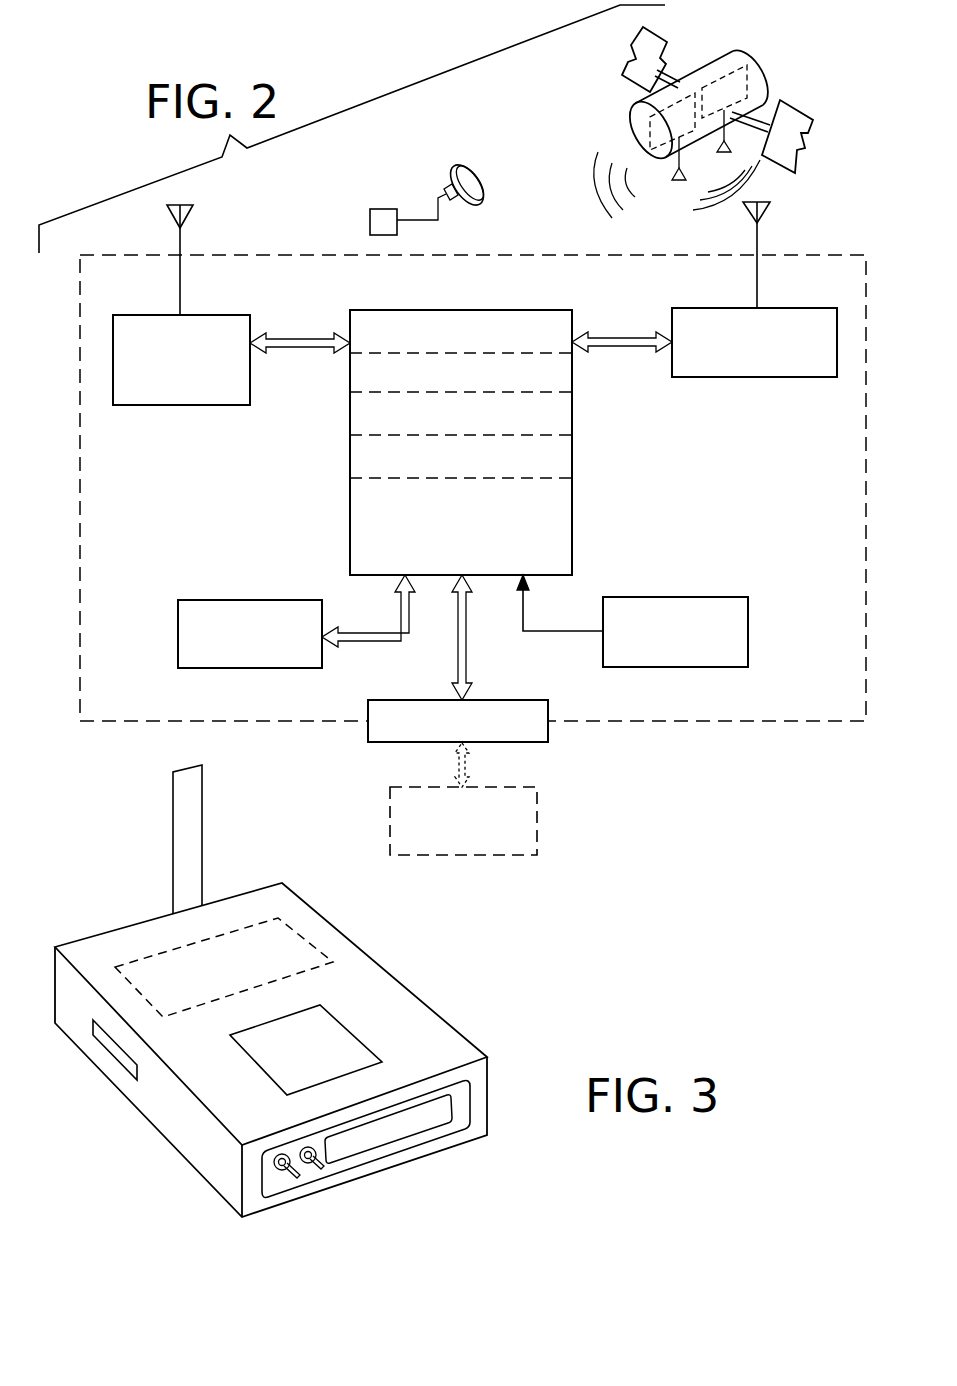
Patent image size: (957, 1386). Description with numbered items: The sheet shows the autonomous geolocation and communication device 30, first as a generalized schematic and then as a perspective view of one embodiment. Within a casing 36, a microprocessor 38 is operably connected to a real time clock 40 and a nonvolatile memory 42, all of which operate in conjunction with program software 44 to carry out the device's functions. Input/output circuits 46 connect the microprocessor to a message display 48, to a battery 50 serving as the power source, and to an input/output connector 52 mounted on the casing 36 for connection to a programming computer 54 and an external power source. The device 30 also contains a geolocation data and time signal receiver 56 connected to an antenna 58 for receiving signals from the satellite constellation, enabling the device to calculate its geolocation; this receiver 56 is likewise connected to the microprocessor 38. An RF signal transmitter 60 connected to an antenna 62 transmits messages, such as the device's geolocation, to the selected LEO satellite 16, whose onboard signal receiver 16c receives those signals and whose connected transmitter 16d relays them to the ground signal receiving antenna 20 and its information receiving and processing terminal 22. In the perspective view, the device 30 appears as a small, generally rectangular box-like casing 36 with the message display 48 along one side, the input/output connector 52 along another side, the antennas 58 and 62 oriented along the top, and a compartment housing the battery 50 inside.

In FIG. 2, the satellite 16 is at (706, 122).
In FIG. 2, the signal receiver 16c is at (728, 70).
In FIG. 2, the transmitter 16d is at (616, 108).
In FIG. 2, the signal receiving antenna 20 is at (456, 170).
In FIG. 2, the information receiving and processing terminal 22 is at (373, 209).
In FIG. 2, the device 30 is at (118, 730).
In FIG. 3, the device 30 is at (436, 949).
In FIG. 2, the casing 36 is at (722, 721).
In FIG. 2, the microprocessor 38 is at (470, 310).
In FIG. 2, the real time clock 40 is at (572, 378).
In FIG. 2, the nonvolatile memory 42 is at (572, 418).
In FIG. 2, the program software 44 is at (572, 456).
In FIG. 2, the input/output circuits 46 is at (572, 540).
In FIG. 2, the message display 48 is at (218, 600).
In FIG. 3, the message display 48 is at (383, 1138).
In FIG. 2, the battery 50 is at (704, 597).
In FIG. 3, the battery 50 is at (286, 948).
In FIG. 2, the input/output connector 52 is at (530, 742).
In FIG. 3, the input/output connector 52 is at (128, 1068).
In FIG. 2, the programming computer 54 is at (537, 814).
In FIG. 2, the geolocation data and time signal receiver 56 is at (170, 405).
In FIG. 2, the antenna 58 is at (193, 212).
In FIG. 3, the antenna 58 is at (340, 1047).
In FIG. 2, the RF signal transmitter 60 is at (762, 377).
In FIG. 2, the antenna 62 is at (770, 209).
In FIG. 3, the antenna 62 is at (187, 830).